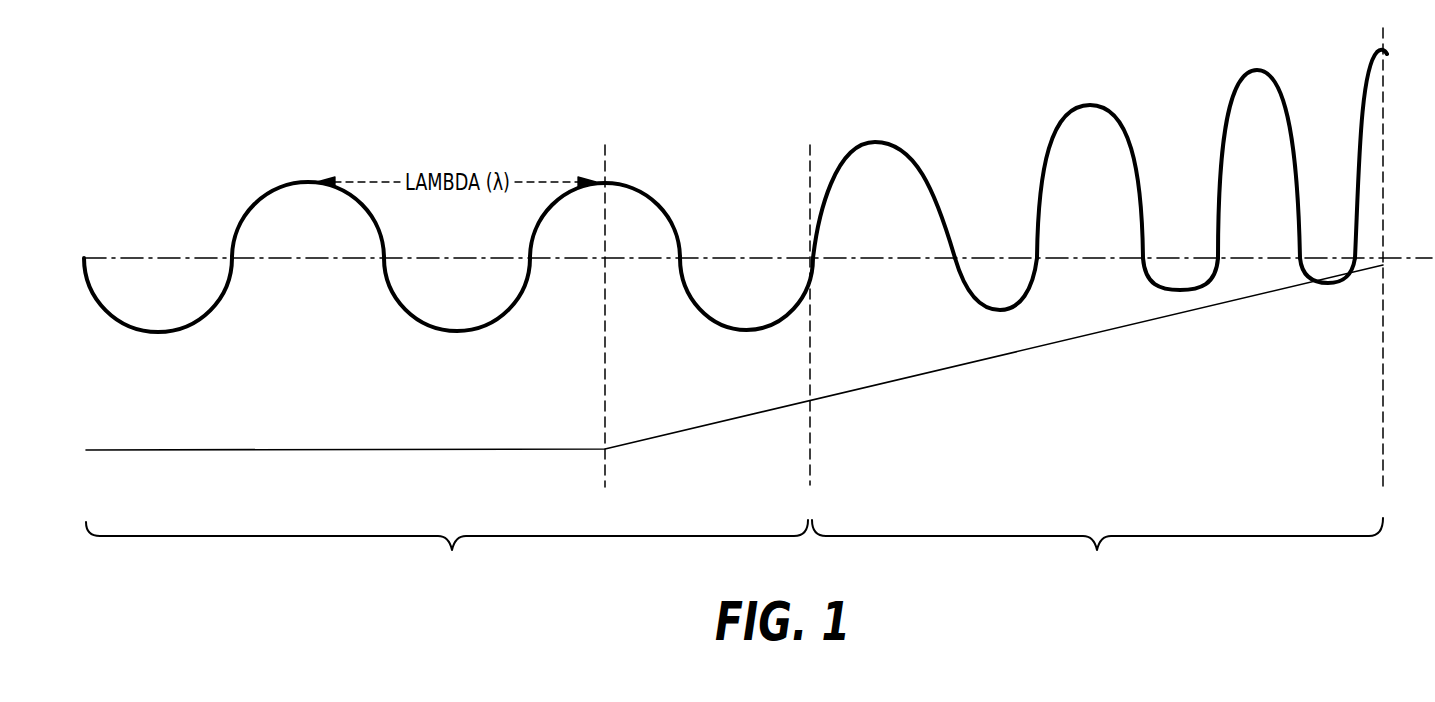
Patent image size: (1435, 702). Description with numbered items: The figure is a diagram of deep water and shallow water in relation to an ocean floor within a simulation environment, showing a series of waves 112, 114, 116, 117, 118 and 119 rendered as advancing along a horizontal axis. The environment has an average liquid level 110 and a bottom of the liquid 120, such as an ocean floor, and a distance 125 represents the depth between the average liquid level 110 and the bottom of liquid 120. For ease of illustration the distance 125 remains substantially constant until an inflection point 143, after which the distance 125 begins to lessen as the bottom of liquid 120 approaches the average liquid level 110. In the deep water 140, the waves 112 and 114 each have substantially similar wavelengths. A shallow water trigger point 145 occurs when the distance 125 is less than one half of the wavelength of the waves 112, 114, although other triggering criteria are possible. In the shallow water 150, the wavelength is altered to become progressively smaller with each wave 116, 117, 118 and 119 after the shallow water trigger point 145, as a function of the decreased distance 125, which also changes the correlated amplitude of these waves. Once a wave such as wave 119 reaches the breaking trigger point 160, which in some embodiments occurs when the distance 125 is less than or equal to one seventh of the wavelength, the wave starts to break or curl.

The average liquid level 110 is at (170, 257).
The wave 112 is at (323, 244).
The wave 114 is at (593, 239).
The wave 116 is at (893, 221).
The wave 117 is at (1108, 211).
The wave 118 is at (1274, 201).
The wave 119 is at (1372, 165).
The bottom of the liquid 120 is at (113, 452).
The distance 125 is at (207, 260).
The deep water 140 is at (447, 552).
The inflection point 143 is at (605, 447).
The shallow water trigger point 145 is at (810, 436).
The shallow water 150 is at (1097, 551).
The breaking trigger point 160 is at (1383, 42).